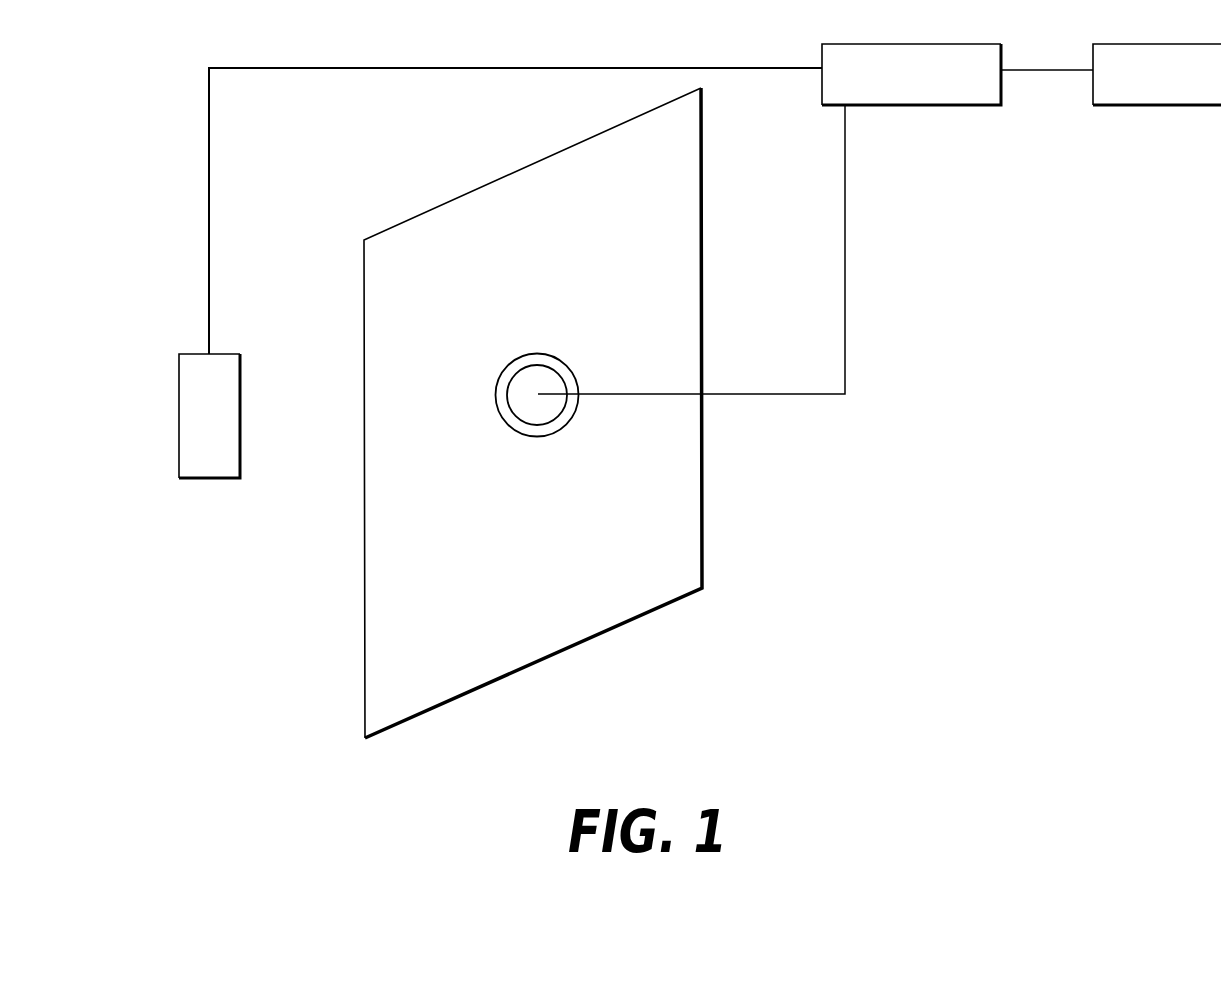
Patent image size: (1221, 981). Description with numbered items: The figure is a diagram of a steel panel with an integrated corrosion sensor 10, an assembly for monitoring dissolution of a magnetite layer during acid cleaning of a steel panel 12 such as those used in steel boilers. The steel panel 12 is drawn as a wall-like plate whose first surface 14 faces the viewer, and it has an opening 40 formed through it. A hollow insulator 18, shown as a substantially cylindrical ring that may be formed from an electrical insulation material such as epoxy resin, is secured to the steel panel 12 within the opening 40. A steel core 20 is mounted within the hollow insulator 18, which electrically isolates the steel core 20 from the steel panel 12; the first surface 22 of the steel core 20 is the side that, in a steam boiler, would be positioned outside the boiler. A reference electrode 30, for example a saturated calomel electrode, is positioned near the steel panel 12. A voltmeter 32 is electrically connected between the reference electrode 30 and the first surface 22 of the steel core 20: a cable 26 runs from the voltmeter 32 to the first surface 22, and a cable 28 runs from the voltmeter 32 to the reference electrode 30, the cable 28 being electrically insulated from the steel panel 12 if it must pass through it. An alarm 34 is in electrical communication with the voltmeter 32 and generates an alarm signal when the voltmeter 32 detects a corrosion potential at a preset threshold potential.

The steel panel with an integrated corrosion sensor 10 is at (963, 415).
The steel panel 12 is at (685, 500).
The first surface of the steel panel 14 is at (432, 629).
The hollow insulator 18 is at (511, 427).
The steel core 20 is at (548, 415).
The first surface of the steel core 22 is at (537, 373).
The cable 26 is at (777, 394).
The cable 28 is at (502, 68).
The reference electrode 30 is at (179, 420).
The voltmeter 32 is at (928, 105).
The alarm 34 is at (1152, 105).
The opening 40 is at (516, 358).